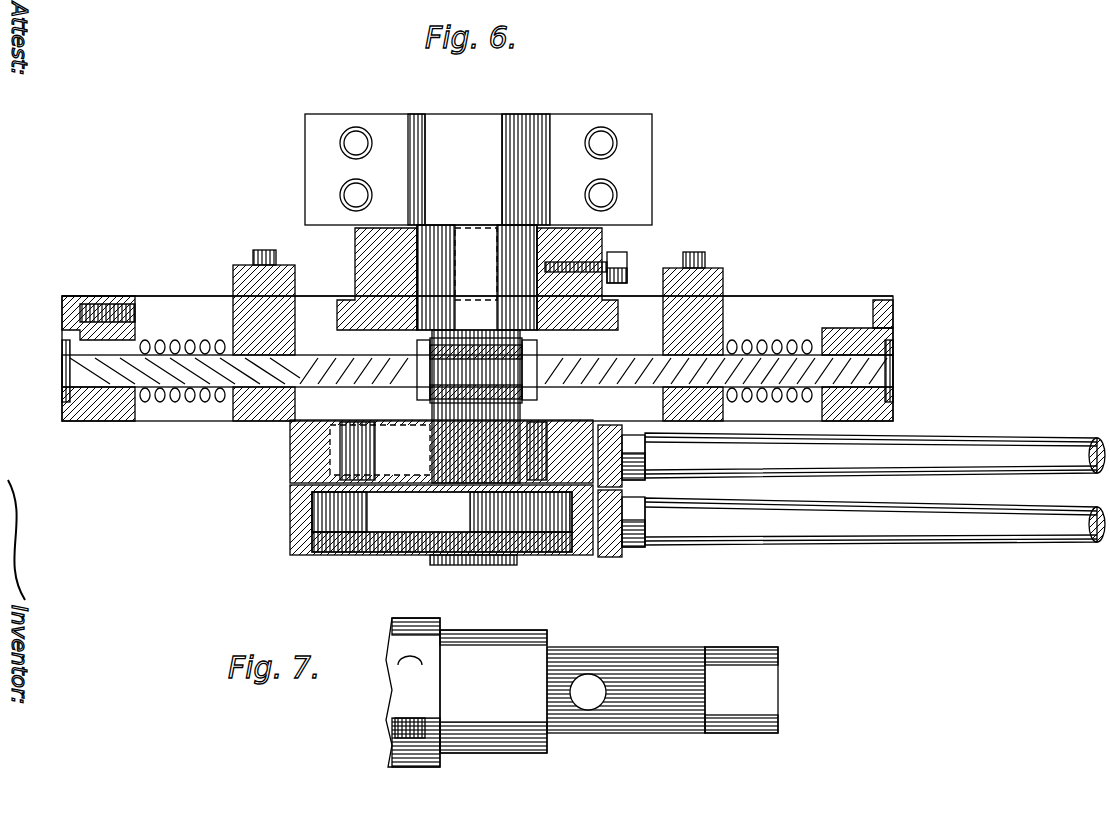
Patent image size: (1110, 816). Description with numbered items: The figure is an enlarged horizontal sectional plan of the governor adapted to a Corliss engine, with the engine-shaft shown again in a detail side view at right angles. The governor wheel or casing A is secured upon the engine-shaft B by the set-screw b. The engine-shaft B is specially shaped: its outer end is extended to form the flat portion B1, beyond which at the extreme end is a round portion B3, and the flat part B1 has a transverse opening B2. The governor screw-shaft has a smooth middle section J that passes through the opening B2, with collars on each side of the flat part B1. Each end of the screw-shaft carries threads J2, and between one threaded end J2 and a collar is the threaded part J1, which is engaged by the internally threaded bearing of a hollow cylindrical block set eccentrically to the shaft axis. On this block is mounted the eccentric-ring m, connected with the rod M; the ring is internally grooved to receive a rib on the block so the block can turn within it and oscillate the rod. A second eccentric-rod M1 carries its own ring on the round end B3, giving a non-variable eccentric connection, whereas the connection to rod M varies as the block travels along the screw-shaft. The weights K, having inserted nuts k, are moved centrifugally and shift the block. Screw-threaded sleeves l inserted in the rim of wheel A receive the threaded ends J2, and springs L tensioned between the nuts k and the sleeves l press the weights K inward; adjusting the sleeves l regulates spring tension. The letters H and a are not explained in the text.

In FIG. 6, the governor wheel or casing A is at (86, 296).
In FIG. 6, the engine-shaft B is at (478, 265).
In FIG. 7, the engine-shaft B is at (466, 692).
In FIG. 6, the flat portion of engine-shaft B1 is at (465, 460).
In FIG. 7, the flat portion of engine-shaft B1 is at (626, 715).
In FIG. 7, the transverse opening B2 is at (590, 680).
In FIG. 7, the round portion of engine-shaft B3 is at (772, 690).
In FIG. 6, the clamp block a is at (362, 282).
In FIG. 6, the set-screw b is at (627, 257).
In FIG. 6, the bearing block H is at (245, 322).
In FIG. 6, the smooth middle section of screw-shaft J is at (285, 508).
In FIG. 6, the threaded part of screw-shaft J1 is at (292, 438).
In FIG. 6, the threads on screw-shaft ends J2 is at (178, 405).
In FIG. 6, the weights K is at (263, 421).
In FIG. 6, the inserted nuts k is at (668, 345).
In FIG. 6, the springs L is at (155, 405).
In FIG. 6, the screw-threaded sleeves l is at (60, 380).
In FIG. 6, the eccentric-ring m is at (292, 470).
In FIG. 6, the eccentric-rod M is at (930, 440).
In FIG. 6, the eccentric-rod M1 is at (900, 540).